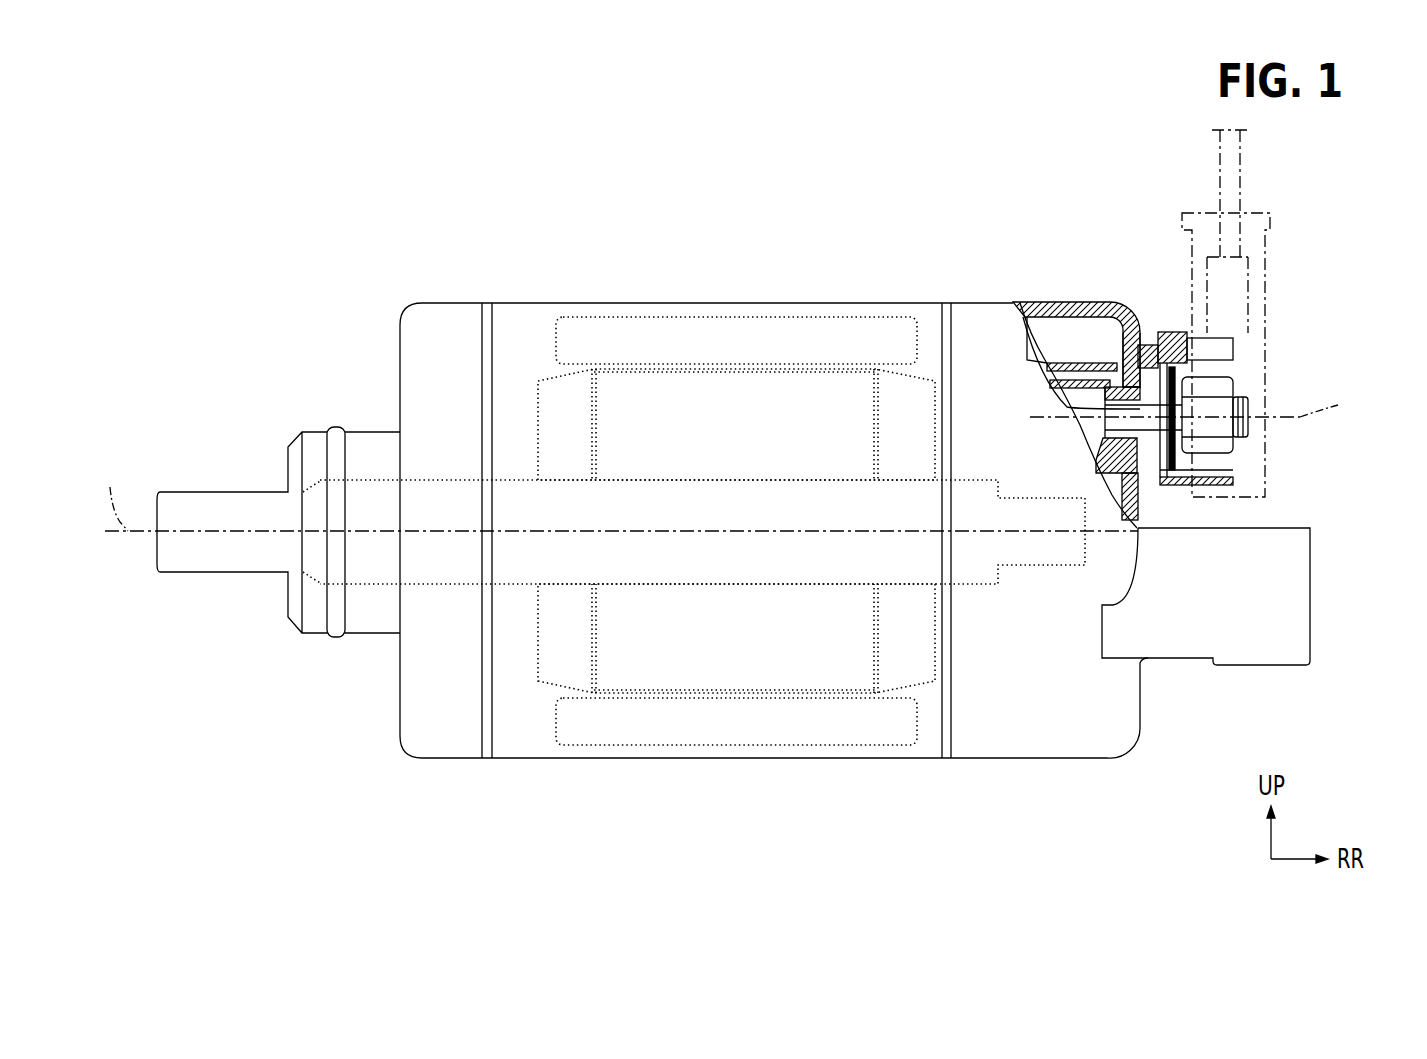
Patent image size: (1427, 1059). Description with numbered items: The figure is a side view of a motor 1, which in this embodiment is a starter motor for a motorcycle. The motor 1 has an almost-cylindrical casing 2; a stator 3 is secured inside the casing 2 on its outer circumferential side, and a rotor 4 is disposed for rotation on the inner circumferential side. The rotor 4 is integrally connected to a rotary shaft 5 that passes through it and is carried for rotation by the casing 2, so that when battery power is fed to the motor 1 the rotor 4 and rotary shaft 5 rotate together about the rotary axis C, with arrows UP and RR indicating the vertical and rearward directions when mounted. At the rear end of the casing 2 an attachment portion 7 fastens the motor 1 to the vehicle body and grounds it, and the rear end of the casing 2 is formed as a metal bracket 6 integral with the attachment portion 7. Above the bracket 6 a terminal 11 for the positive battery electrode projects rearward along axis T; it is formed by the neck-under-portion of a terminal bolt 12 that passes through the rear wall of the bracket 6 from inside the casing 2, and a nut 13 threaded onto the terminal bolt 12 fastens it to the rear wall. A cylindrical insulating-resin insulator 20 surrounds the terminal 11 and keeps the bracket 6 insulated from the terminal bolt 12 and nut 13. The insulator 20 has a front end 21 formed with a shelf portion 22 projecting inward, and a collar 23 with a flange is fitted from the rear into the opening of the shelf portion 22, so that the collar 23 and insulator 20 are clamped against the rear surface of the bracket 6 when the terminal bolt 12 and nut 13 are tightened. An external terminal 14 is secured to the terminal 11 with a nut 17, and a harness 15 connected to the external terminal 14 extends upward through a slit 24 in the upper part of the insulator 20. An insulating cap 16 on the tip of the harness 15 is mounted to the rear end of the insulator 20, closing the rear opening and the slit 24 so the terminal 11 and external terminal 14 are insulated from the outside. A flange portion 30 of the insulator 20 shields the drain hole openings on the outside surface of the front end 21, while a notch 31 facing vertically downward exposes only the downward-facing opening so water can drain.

The motor 1 is at (327, 225).
The casing 2 is at (447, 302).
The stator 3 is at (602, 320).
The rotor 4 is at (678, 365).
The rotary shaft 5 is at (248, 490).
The bracket 6 is at (1055, 303).
The attachment portion 7 is at (1313, 603).
The terminal 11 is at (1240, 417).
The terminal bolt 12 is at (1248, 400).
The nut 13 is at (1215, 378).
The external terminal 14 is at (1235, 480).
The harness 15 is at (1250, 155).
The insulating cap 16 is at (1266, 445).
The nut 17 is at (1238, 455).
The insulator 20 is at (1180, 332).
The front end 21 is at (1052, 306).
The shelf portion 22 is at (1063, 407).
The collar 23 is at (1150, 345).
The slit 24 is at (1233, 340).
The flange portion 30 is at (1143, 335).
The notch 31 is at (1148, 492).